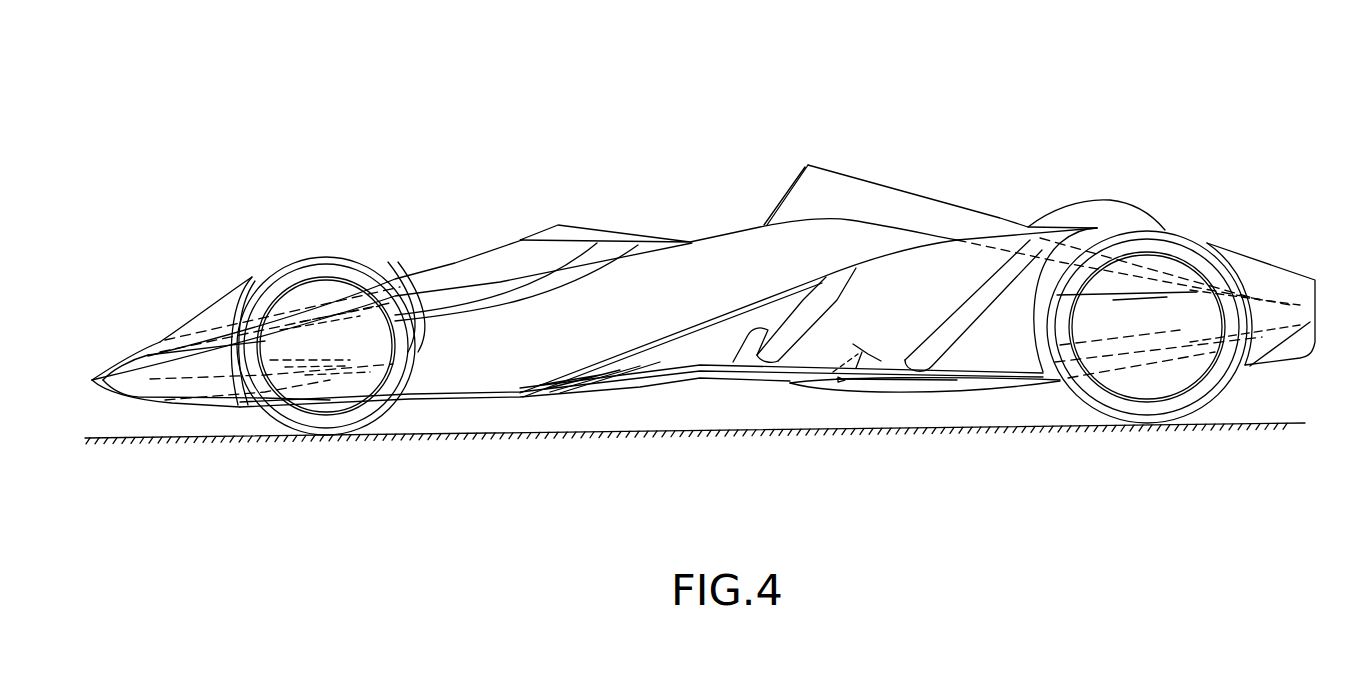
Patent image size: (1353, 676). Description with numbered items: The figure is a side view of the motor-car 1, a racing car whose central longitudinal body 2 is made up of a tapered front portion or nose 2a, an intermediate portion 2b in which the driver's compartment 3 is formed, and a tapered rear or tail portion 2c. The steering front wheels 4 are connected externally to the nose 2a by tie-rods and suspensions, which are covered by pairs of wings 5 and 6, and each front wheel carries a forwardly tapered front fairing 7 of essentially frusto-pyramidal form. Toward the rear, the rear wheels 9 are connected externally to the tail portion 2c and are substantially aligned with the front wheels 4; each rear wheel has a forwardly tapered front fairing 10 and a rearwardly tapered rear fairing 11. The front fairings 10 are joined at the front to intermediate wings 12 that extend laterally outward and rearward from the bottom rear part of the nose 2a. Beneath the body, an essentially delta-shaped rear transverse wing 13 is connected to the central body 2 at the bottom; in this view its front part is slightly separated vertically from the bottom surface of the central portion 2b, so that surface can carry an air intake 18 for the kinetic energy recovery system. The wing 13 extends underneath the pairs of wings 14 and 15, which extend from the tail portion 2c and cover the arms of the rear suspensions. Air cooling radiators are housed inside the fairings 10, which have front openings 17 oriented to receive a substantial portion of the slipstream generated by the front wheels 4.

The motor-car 1 is at (465, 150).
The central longitudinal body 2 is at (457, 264).
The front portion or nose 2a is at (408, 290).
The intermediate portion 2b is at (715, 268).
The rear or tail portion 2c is at (1160, 250).
The driver's compartment 3 is at (599, 226).
The steering front wheels 4 is at (290, 257).
The wings 5 is at (408, 288).
The wings 6 is at (350, 373).
The front fairing 7 is at (200, 303).
The rear wheels 9 is at (1204, 237).
The front fairing 10 is at (907, 342).
The rear fairing 11 is at (1276, 270).
The intermediate wings 12 is at (446, 408).
The rear transverse wing 13 is at (994, 384).
The wings 14 is at (1113, 300).
The wings 15 is at (1092, 395).
The openings 17 is at (735, 364).
The air intake 18 is at (838, 372).